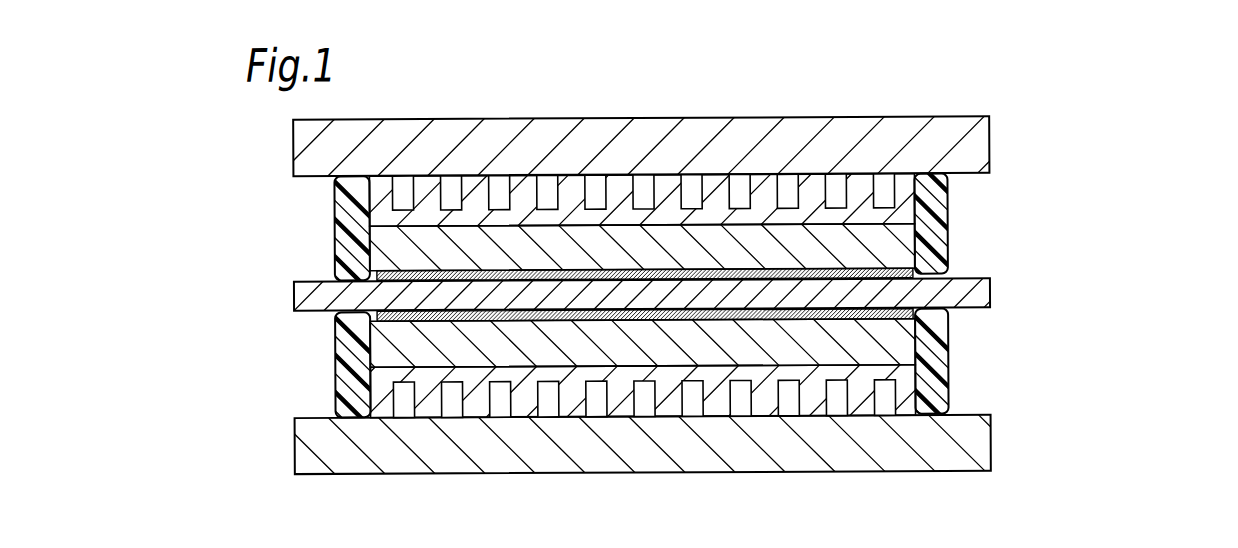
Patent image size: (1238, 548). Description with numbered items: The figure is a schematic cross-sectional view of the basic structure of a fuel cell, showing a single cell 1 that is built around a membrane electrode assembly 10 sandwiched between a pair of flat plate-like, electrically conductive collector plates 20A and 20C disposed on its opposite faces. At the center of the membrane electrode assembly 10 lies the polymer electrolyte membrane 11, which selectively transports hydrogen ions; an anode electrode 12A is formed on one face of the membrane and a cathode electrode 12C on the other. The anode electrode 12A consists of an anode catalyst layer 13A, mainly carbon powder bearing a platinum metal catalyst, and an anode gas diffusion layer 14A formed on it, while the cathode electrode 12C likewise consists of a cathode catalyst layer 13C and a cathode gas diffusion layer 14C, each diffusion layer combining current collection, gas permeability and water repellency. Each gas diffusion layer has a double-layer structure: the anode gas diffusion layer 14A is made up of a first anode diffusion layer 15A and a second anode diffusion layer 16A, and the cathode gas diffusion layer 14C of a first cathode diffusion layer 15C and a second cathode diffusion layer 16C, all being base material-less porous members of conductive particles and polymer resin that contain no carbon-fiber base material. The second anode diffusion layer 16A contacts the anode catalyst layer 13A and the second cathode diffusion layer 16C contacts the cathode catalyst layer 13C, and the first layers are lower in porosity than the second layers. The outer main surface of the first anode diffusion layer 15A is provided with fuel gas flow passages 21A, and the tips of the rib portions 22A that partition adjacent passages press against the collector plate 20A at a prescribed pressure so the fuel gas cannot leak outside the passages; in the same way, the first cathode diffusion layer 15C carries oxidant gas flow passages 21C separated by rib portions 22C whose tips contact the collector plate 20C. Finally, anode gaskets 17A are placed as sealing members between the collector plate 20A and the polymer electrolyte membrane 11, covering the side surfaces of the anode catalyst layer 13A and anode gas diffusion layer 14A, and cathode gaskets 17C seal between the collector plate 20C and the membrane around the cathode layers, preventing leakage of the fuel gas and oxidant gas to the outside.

The cell 1 is at (723, 292).
The membrane electrode assembly 10 is at (737, 292).
The polymer electrolyte membrane 11 is at (983, 291).
The anode electrode 12A is at (742, 159).
The cathode electrode 12C is at (727, 425).
The anode catalyst layer 13A is at (912, 273).
The cathode catalyst layer 13C is at (912, 316).
The anode gas diffusion layer 14A is at (712, 154).
The cathode gas diffusion layer 14C is at (697, 433).
The first anode diffusion layer 15A is at (682, 132).
The first cathode diffusion layer 15C is at (667, 452).
The second anode diffusion layer 16A is at (905, 242).
The second cathode diffusion layer 16C is at (905, 340).
The anode gasket 17A is at (348, 212).
The cathode gasket 17C is at (348, 368).
The collector plate 20A is at (987, 140).
The collector plate 20C is at (987, 432).
The fuel gas flow passage 21A is at (452, 192).
The oxidant gas flow passage 21C is at (451, 405).
The rib portion 22A is at (527, 192).
The rib portion 22C is at (528, 402).